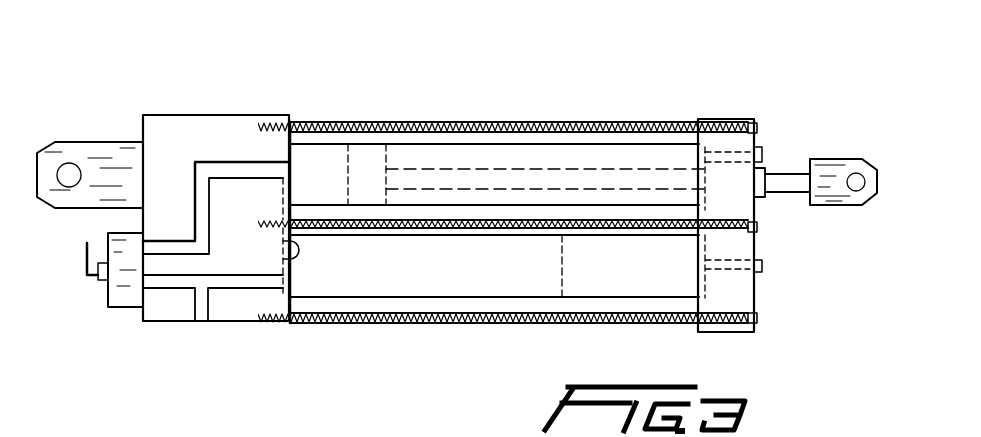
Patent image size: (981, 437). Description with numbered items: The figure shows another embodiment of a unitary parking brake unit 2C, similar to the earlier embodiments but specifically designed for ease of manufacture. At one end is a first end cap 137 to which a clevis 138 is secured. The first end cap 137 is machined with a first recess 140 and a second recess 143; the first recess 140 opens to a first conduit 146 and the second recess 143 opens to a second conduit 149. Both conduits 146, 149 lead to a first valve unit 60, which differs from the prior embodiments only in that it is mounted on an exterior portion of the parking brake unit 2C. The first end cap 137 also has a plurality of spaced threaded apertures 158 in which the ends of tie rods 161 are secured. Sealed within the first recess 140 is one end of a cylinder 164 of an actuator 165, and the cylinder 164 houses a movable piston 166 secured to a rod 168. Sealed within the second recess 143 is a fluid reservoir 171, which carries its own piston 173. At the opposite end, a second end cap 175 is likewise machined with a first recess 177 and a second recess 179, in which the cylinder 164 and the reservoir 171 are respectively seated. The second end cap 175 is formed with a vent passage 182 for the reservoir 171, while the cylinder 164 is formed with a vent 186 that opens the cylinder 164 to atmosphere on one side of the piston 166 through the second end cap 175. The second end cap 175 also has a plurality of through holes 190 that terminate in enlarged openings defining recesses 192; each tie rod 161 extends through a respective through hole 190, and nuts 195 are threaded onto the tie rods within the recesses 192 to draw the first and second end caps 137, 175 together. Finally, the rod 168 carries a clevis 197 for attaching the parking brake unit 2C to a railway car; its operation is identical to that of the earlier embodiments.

The parking brake unit 2C is at (668, 78).
The first valve unit 60 is at (106, 299).
The first end cap 137 is at (172, 127).
The clevis 138 is at (90, 142).
The first recess 140 is at (290, 156).
The second recess 143 is at (283, 255).
The first conduit 146 is at (207, 181).
The second conduit 149 is at (235, 282).
The threaded apertures 158 is at (286, 115).
The tie rods 161 is at (385, 121).
The cylinder 164 is at (462, 143).
The actuator 165 is at (535, 143).
The piston 166 is at (358, 193).
The rod 168 is at (482, 183).
The fluid reservoir 171 is at (478, 298).
The piston 173 is at (565, 273).
The second end cap 175 is at (743, 243).
The first recess 177 is at (702, 188).
The second recess 179 is at (703, 274).
The vent passage 182 is at (760, 266).
The vent 186 is at (705, 157).
The through holes 190 is at (730, 325).
The recesses 192 is at (758, 137).
The nuts 195 is at (712, 232).
The clevis 197 is at (846, 167).